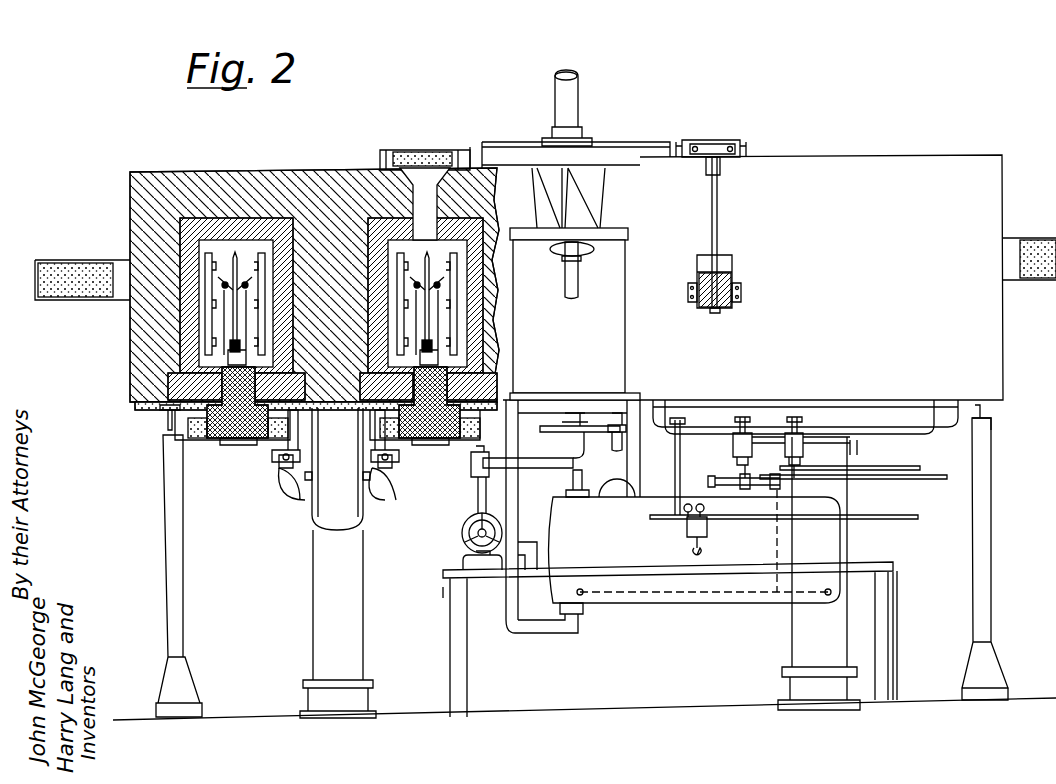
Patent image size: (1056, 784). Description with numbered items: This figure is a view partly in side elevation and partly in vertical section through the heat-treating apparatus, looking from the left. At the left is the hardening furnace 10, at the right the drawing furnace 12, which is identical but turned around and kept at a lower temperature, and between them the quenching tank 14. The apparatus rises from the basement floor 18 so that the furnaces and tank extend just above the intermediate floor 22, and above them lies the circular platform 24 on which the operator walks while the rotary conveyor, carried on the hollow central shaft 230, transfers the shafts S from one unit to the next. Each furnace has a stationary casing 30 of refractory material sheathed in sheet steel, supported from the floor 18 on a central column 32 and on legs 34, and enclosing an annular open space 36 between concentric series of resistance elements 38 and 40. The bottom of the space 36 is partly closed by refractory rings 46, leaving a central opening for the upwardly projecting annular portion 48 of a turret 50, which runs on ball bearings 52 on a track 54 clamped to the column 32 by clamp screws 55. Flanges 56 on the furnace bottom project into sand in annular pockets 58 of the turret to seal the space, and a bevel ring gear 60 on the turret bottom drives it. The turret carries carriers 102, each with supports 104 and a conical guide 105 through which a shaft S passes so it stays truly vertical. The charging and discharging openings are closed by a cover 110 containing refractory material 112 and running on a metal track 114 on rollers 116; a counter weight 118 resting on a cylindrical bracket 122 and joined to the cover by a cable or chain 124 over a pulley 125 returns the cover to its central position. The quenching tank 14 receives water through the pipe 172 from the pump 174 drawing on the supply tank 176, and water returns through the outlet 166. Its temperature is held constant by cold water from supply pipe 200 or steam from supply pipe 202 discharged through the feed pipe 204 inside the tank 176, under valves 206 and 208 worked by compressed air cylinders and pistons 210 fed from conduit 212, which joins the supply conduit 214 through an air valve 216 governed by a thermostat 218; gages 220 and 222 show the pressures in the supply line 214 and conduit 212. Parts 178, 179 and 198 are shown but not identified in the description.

The hardening furnace 10 is at (168, 172).
The drawing furnace 12 is at (981, 165).
The quenching tank 14 is at (633, 356).
The floor 18 is at (232, 718).
The intermediate floor 22 is at (75, 273).
The circular platform 24 is at (638, 146).
The stationary casing 30 is at (240, 205).
The central column 32 is at (325, 611).
The legs 34 is at (184, 570).
The annular open space 36 is at (248, 262).
The resistance elements 38 is at (298, 225).
The resistance elements 40 is at (206, 281).
The rings 46 is at (170, 413).
The annular portion 48 is at (238, 408).
The turret 50 is at (944, 408).
The ball bearings 52 is at (284, 470).
The track 54 is at (856, 455).
The clamp screws 55 is at (367, 476).
The flanges 56 is at (182, 432).
The annular pockets 58 is at (288, 442).
The bevel ring gear 60 is at (452, 442).
The carriers 102 is at (226, 311).
The supports 104 is at (224, 349).
The conical guide 105 is at (222, 287).
The cover 110 is at (722, 142).
The refractory material 112 is at (446, 153).
The metal track 114 is at (382, 168).
The rollers 116 is at (390, 150).
The counter weight 118 is at (735, 286).
The cylindrical brackets 122 is at (731, 266).
The cables or chains 124 is at (719, 226).
The pulleys 125 is at (705, 170).
The outlet 166 is at (574, 276).
The pipe 172 is at (570, 456).
The pump 174 is at (464, 548).
The supply tank 176 is at (708, 602).
The stirrer shaft 178 is at (590, 426).
The valve 179 is at (472, 470).
The truss 198 is at (586, 188).
The supply pipe 200 is at (935, 480).
The supply pipe 202 is at (917, 467).
The feed pipe 204 is at (604, 594).
The valve 206 is at (746, 489).
The valve 208 is at (800, 445).
The compressed air cylinders and pistons 210 is at (791, 433).
The conduit 212 is at (703, 420).
The supply conduit 214 is at (868, 520).
The air valve 216 is at (688, 530).
The thermostat 218 is at (692, 551).
The air gage 220 is at (699, 504).
The gage 222 is at (685, 517).
The hollow central shaft 230 is at (570, 95).
The shaft S is at (238, 326).